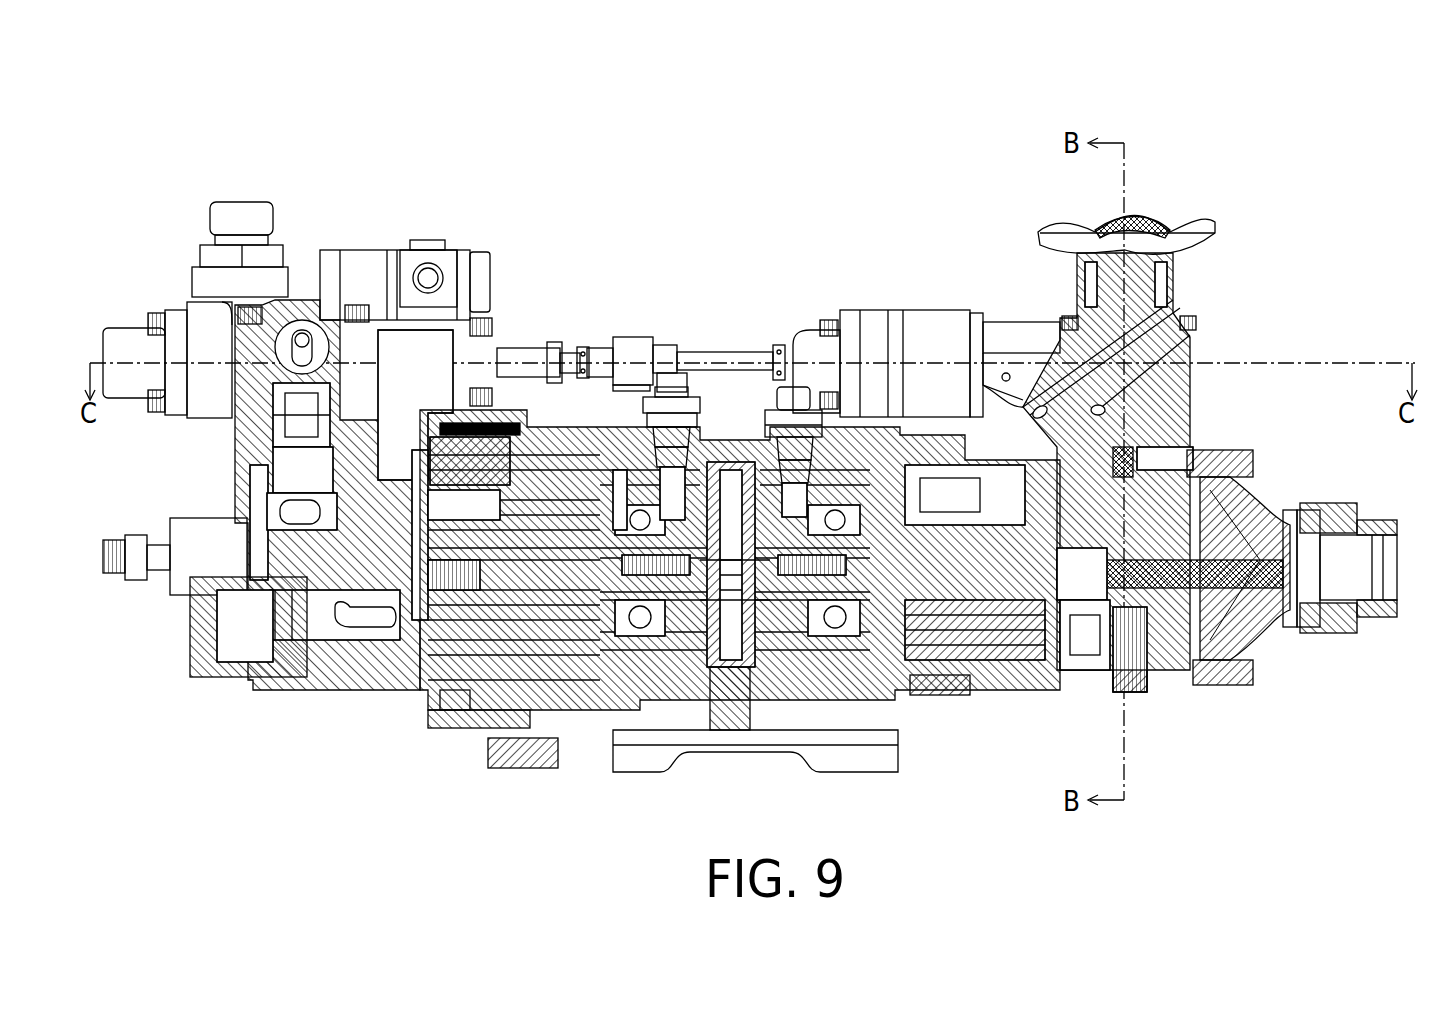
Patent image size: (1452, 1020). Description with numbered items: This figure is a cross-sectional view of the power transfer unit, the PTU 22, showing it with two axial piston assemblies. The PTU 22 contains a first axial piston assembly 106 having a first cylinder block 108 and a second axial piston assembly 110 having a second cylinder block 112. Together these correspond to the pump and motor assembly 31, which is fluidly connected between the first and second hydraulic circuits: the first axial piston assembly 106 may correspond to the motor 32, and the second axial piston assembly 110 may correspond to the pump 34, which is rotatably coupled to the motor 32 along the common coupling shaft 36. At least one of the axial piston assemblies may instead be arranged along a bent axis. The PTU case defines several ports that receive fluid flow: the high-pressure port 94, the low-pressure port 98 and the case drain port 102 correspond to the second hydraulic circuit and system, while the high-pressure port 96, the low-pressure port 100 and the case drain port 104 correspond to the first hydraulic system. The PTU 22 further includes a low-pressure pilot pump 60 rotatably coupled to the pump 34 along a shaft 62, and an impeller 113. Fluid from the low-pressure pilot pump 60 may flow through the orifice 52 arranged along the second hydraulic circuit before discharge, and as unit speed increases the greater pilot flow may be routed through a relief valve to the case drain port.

The PTU 22 is at (242, 117).
The high-pressure port 96 is at (220, 218).
The low-pressure port 100 is at (200, 628).
The first cylinder block 108 is at (470, 480).
The case drain port 104 is at (670, 392).
The case drain port 102 is at (792, 396).
The second cylinder block 112 is at (965, 500).
The high-pressure port 94 is at (1062, 225).
The motor 32 is at (469, 668).
The first axial piston assembly 106 is at (520, 540).
The pump and motor assembly 31 is at (740, 602).
The common coupling shaft 36 is at (760, 605).
The pump 34 is at (975, 681).
The second axial piston assembly 110 is at (950, 640).
The orifice 52 is at (1085, 622).
The low-pressure pilot pump 60 is at (1170, 590).
The shaft 62 is at (1140, 622).
The impeller 113 is at (1260, 592).
The low-pressure port 98 is at (1385, 582).